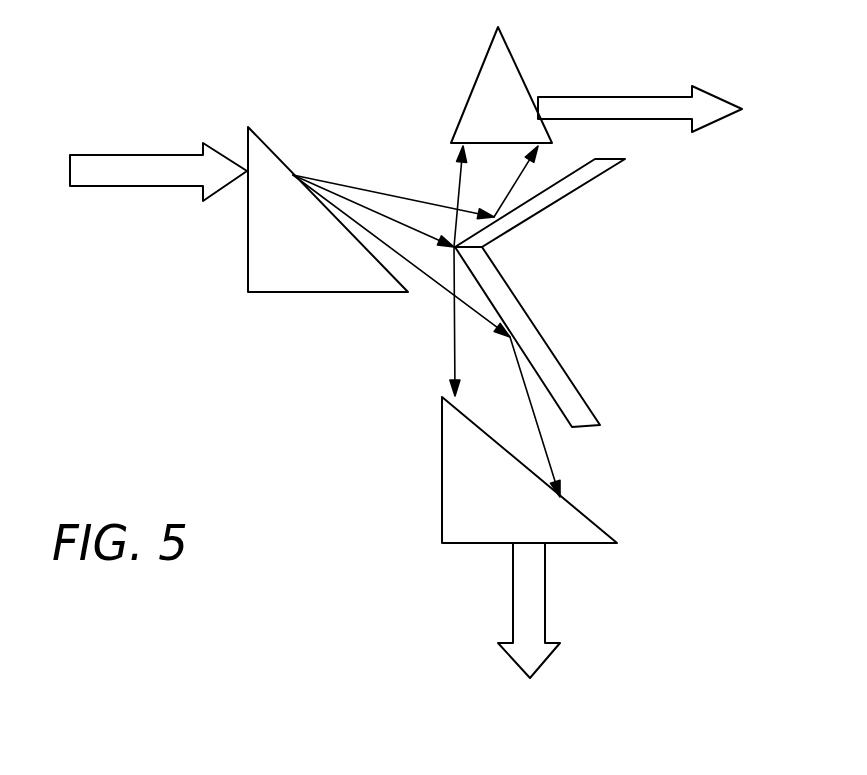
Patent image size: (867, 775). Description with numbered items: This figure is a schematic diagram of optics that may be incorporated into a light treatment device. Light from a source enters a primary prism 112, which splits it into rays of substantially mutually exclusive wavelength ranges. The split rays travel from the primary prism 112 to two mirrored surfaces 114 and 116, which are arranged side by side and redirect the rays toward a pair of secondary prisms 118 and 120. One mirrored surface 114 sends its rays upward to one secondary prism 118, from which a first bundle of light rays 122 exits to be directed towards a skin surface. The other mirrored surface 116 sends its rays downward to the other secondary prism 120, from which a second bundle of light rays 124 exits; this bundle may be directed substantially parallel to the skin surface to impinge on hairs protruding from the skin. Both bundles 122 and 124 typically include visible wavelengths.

The primary prism 112 is at (292, 263).
The mirrored surface 114 is at (553, 188).
The mirrored surface 116 is at (542, 383).
The secondary prism 118 is at (492, 100).
The secondary prism 120 is at (470, 499).
The bundle of light rays 122 is at (608, 100).
The bundle of light rays 124 is at (512, 608).